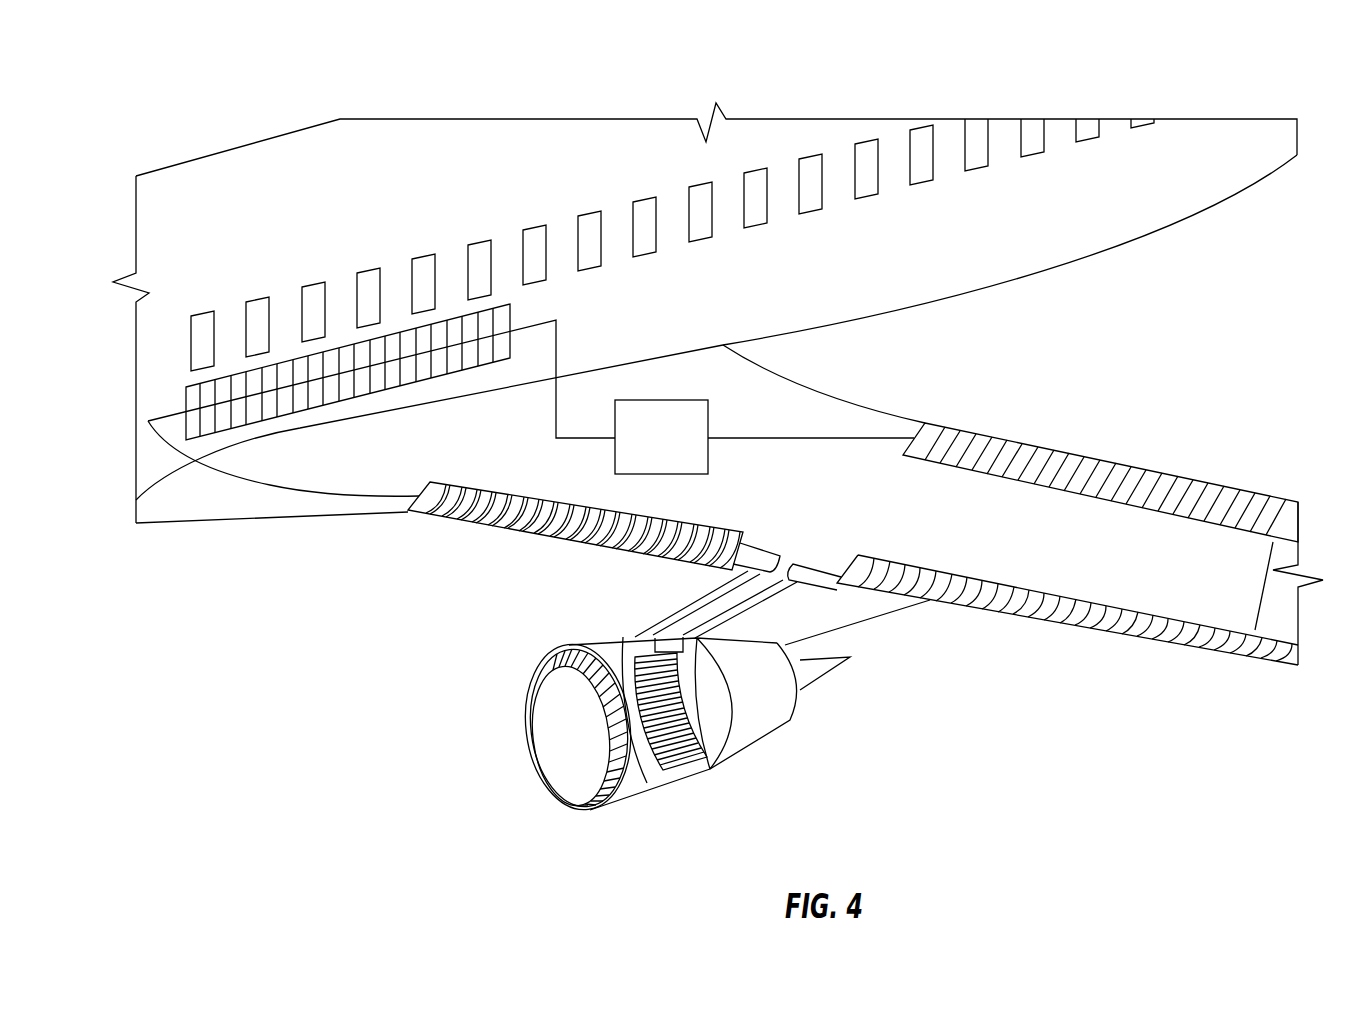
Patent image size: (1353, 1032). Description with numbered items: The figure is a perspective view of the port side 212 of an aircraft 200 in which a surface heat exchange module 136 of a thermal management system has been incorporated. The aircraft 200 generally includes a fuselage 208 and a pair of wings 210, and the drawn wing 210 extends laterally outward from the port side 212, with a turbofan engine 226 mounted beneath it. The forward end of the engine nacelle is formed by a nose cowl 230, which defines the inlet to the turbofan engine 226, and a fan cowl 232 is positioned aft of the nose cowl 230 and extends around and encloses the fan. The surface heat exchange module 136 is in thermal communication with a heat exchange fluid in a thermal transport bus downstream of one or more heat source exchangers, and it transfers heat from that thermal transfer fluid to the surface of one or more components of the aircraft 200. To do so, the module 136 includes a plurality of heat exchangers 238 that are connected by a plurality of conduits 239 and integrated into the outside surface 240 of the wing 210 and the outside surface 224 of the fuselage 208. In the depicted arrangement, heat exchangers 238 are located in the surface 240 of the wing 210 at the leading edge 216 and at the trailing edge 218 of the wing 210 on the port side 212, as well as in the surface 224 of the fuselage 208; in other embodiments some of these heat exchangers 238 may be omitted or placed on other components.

The aircraft 200 is at (426, 70).
The fuselage 208 is at (836, 160).
The outside surface of the fuselage 224 is at (562, 238).
The surface heat exchange module 136 is at (680, 370).
The heat exchangers 238 is at (458, 317).
The conduits 239 is at (272, 485).
The outside surface of the wing 240 is at (951, 500).
The trailing edge 218 is at (1082, 424).
The wing 210 is at (1105, 525).
The port side 212 is at (269, 658).
The leading edge 216 is at (1006, 648).
The nose cowl 230 is at (553, 633).
The fan cowl 232 is at (613, 620).
The turbofan engine 226 is at (737, 798).